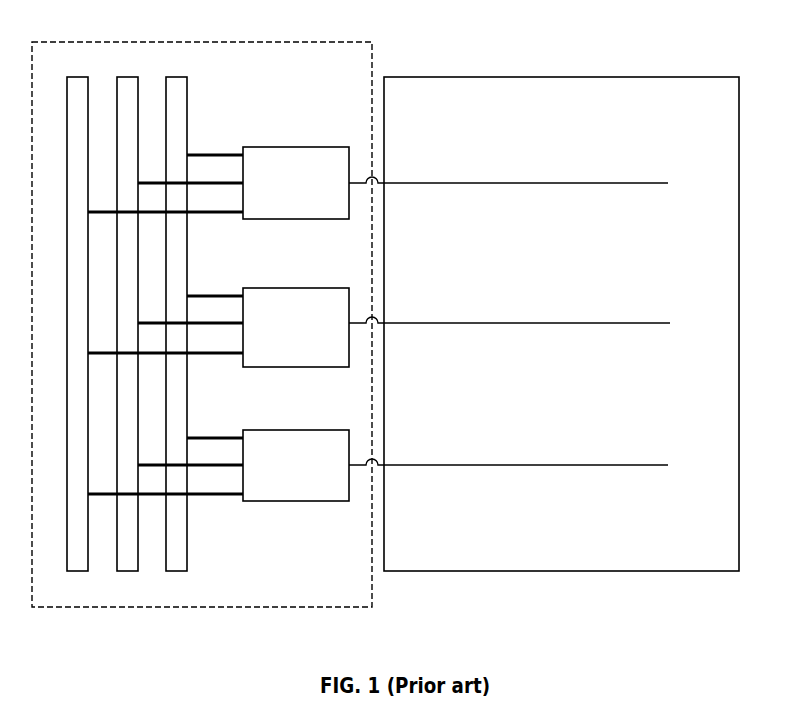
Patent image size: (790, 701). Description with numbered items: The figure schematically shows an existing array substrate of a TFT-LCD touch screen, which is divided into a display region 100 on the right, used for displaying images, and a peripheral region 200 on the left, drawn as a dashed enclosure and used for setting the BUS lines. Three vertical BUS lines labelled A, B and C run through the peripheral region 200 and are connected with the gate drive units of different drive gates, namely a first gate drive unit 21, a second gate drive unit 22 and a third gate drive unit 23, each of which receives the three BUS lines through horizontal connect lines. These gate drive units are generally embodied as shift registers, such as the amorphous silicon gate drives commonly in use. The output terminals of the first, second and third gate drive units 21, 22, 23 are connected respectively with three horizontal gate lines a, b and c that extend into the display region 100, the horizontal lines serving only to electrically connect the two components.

The peripheral region 200 is at (243, 42).
The display region 100 is at (562, 77).
The first gate drive unit 21 is at (298, 147).
The second gate drive unit 22 is at (298, 288).
The third gate drive unit 23 is at (298, 430).